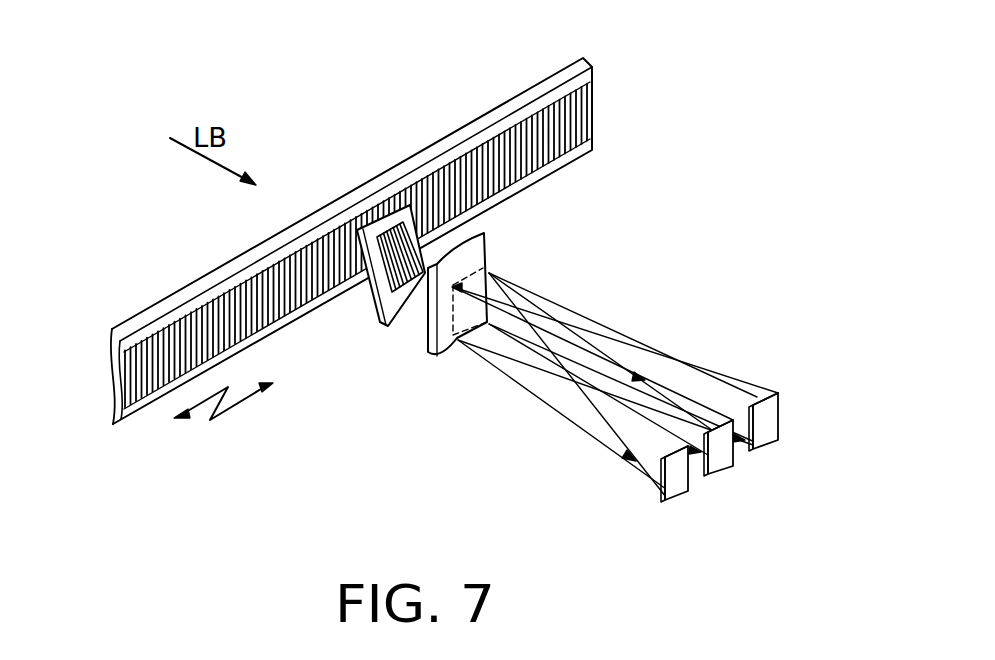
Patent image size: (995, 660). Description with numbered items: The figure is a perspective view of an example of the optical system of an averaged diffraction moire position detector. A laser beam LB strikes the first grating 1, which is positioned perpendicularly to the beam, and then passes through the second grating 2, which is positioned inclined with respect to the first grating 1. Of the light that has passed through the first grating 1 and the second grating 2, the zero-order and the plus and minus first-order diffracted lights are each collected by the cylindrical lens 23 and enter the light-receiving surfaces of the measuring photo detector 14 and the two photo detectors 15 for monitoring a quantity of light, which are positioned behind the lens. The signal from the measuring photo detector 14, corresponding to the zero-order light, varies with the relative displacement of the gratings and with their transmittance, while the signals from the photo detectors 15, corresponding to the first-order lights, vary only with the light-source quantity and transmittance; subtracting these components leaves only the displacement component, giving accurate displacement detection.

The first grating 1 is at (593, 108).
The second grating 2 is at (388, 326).
The cylindrical lens 23 is at (490, 244).
The measuring photo detector 14 is at (722, 474).
The photo detector for monitoring a quantity of light 15 is at (672, 500).